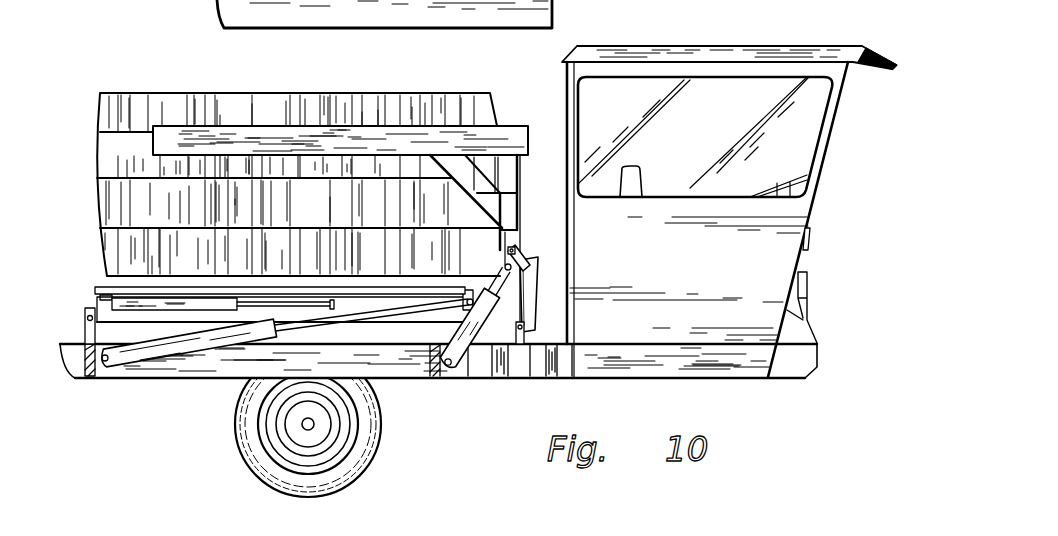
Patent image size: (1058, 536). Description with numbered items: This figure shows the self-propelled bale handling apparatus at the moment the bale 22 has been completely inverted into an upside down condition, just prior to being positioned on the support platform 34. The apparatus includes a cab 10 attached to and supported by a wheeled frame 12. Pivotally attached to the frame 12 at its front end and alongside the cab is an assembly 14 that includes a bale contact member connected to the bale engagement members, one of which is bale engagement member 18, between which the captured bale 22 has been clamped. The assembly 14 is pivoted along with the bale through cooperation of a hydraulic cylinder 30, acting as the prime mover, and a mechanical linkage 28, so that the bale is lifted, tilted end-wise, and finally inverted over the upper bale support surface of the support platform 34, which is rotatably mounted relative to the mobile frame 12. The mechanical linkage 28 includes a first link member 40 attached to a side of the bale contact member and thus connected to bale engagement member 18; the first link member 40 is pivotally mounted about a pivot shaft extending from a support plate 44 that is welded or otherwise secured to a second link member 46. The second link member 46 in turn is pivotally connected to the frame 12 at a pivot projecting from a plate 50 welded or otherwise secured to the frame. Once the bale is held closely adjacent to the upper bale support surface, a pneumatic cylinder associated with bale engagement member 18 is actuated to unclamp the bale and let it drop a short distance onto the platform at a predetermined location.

The cab 10 is at (650, 46).
The wheeled frame 12 is at (208, 377).
The assembly 14 is at (506, 114).
The bale engagement member 18 is at (252, 133).
The bale 22 is at (128, 94).
The mechanical linkage 28 is at (532, 243).
The hydraulic cylinder 30 is at (470, 340).
The support platform 34 is at (95, 291).
The first link member 40 is at (523, 175).
The support plate 44 is at (530, 258).
The second link member 46 is at (530, 292).
The plate 50 is at (524, 345).